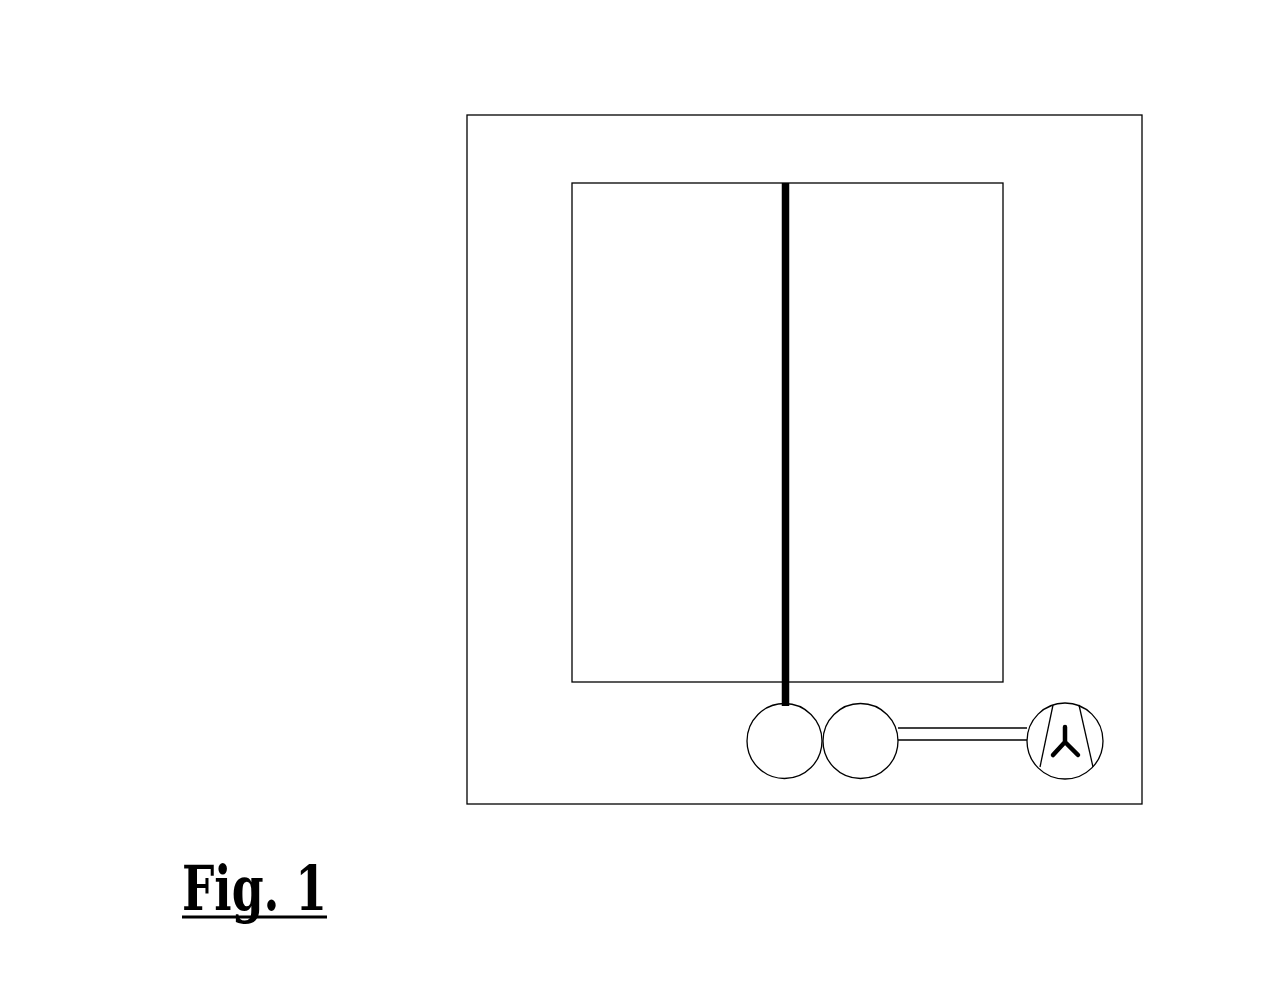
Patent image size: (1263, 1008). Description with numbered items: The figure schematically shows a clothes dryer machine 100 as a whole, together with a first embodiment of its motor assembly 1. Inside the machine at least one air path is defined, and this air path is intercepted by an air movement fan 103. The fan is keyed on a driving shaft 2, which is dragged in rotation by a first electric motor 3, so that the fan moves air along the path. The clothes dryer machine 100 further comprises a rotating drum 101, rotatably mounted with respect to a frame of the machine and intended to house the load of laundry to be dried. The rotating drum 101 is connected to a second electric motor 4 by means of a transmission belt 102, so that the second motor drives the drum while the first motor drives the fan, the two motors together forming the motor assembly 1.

The motor assembly 1 is at (933, 790).
The driving shaft 2 is at (962, 740).
The first electric motor 3 is at (862, 778).
The second electric motor 4 is at (785, 778).
The clothes dryer machine 100 is at (556, 115).
The rotating drum 101 is at (734, 183).
The transmission belt 102 is at (789, 237).
The air movement fan 103 is at (1103, 742).